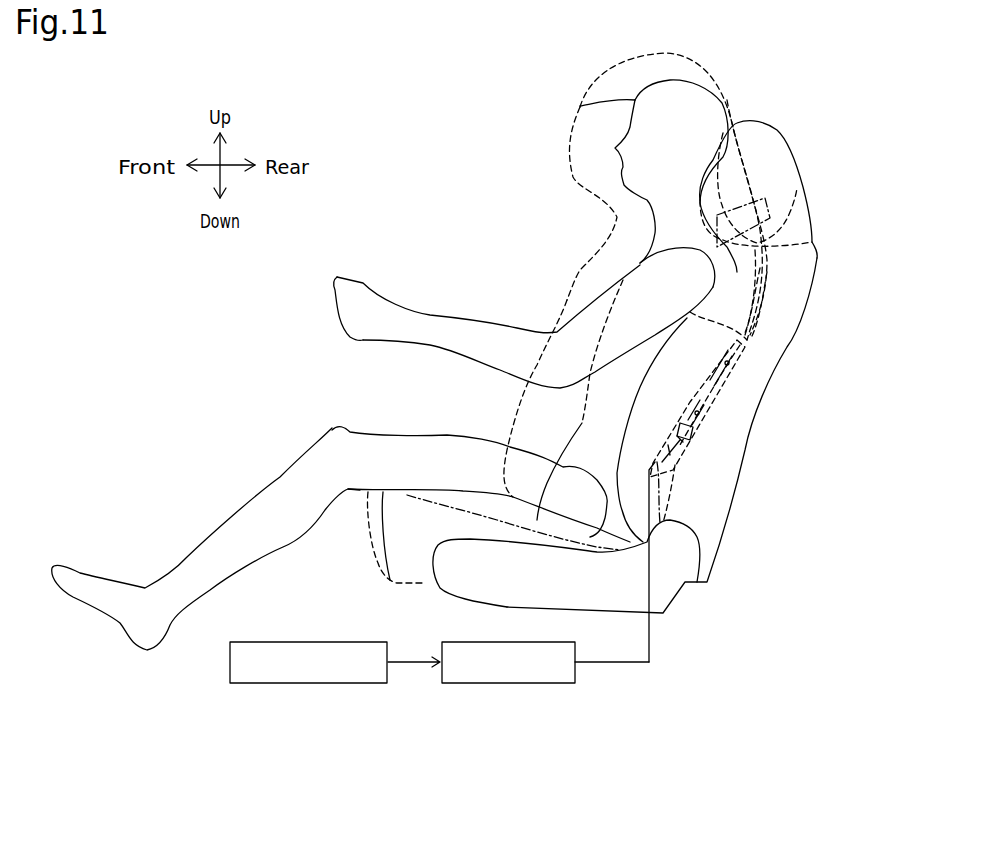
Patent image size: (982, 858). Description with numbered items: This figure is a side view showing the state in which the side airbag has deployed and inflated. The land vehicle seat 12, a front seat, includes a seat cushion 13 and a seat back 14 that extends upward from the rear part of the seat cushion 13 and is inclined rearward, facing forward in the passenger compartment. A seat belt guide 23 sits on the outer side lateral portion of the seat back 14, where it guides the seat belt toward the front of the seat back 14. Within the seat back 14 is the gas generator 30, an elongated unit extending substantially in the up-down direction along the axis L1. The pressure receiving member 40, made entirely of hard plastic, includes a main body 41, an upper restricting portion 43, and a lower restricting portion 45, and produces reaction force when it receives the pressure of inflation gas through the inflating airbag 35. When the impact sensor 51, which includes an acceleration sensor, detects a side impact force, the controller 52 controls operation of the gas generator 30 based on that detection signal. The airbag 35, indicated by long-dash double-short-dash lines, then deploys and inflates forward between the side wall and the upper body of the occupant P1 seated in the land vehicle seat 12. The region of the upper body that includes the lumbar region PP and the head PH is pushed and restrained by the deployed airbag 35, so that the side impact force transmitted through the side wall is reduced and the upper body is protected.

The land vehicle seat 12 is at (707, 607).
The seat cushion 13 is at (372, 547).
The seat back 14 is at (733, 440).
The seat belt guide 23 is at (800, 188).
The gas generator 30 is at (690, 398).
The airbag 35 is at (577, 273).
The pressure receiving member 40 is at (788, 339).
The main body 41 is at (757, 360).
The upper restricting portion 43 is at (767, 290).
The lower restricting portion 45 is at (657, 470).
The impact sensor 51 is at (308, 685).
The controller 52 is at (508, 685).
The axis L1 is at (690, 312).
The head PH is at (580, 106).
The occupant P1 is at (532, 127).
The lumbar region PP is at (660, 503).